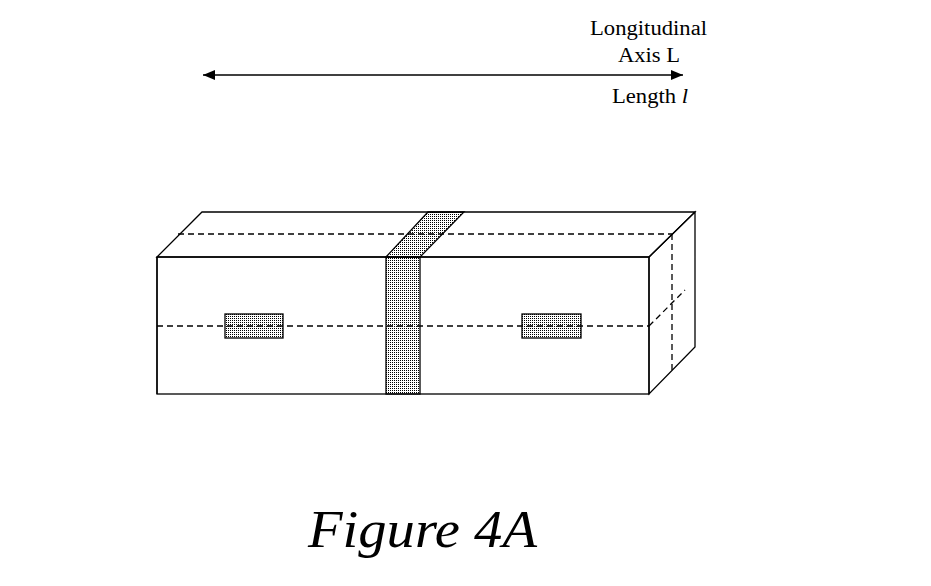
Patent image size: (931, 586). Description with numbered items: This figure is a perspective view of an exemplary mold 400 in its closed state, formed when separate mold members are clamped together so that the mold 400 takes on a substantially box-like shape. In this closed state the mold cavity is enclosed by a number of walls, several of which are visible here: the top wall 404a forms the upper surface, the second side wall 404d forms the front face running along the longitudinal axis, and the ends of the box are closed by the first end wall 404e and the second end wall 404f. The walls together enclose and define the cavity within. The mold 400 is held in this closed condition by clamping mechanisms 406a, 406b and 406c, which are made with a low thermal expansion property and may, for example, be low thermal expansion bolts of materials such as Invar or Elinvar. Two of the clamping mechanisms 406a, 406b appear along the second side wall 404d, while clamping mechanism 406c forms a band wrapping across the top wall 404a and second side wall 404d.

The closed mold 400 is at (414, 340).
The top wall 404a is at (523, 223).
The second side wall 404d is at (222, 382).
The first end wall 404e is at (156, 280).
The second end wall 404f is at (685, 246).
The clamping mechanism 406a is at (225, 326).
The clamping mechanism 406b is at (583, 326).
The clamping mechanism 406c is at (403, 394).